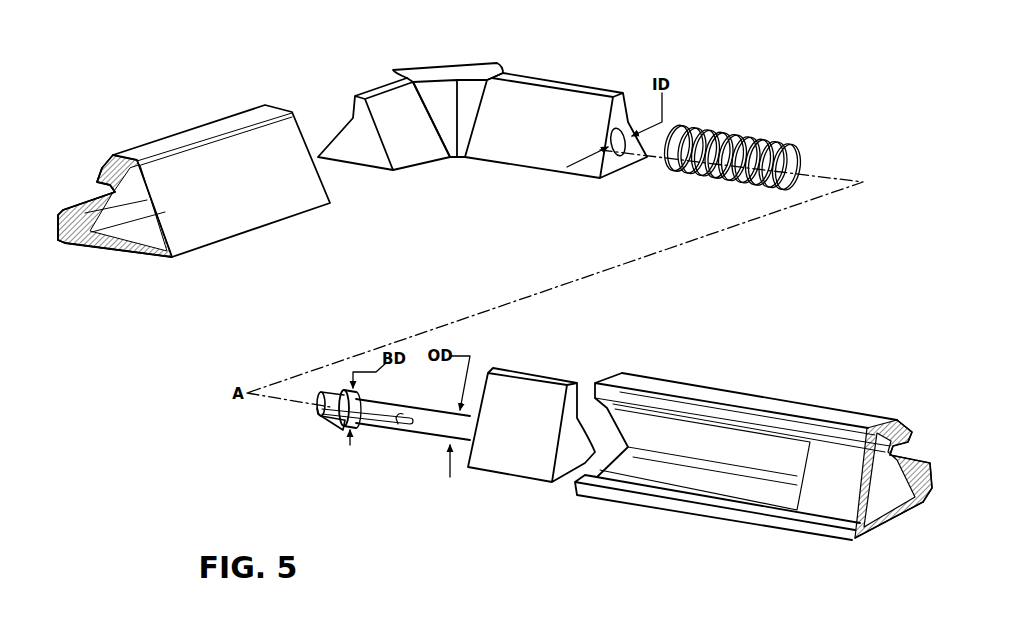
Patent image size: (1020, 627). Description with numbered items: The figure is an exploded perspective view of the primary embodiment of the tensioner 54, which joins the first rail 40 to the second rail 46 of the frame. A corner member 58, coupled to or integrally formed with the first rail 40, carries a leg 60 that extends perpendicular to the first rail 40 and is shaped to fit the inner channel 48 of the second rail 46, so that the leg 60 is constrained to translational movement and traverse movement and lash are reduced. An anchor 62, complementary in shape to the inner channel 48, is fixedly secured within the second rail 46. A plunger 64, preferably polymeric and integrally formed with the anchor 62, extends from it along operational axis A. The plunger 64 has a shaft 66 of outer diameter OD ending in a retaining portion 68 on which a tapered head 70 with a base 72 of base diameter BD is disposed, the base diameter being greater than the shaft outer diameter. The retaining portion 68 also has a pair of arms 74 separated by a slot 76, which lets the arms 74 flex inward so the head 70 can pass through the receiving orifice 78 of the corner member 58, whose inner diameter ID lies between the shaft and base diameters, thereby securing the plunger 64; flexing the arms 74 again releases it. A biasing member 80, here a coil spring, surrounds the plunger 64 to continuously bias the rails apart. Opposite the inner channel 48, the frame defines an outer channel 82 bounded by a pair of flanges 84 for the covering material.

The first rail 40 is at (168, 143).
The second rail 46 is at (850, 415).
The inner channel 48 is at (737, 488).
The tensioner 54 is at (705, 82).
The corner member 58 is at (448, 68).
The leg 60 is at (533, 107).
The anchor 62 is at (542, 397).
The plunger 64 is at (328, 392).
The shaft 66 is at (440, 432).
The retaining portion 68 is at (410, 443).
The head 70 is at (317, 407).
The base 72 is at (362, 404).
The arms 74 is at (397, 410).
The slot 76 is at (409, 425).
The receiving orifice 78 is at (620, 152).
The biasing member 80 is at (780, 152).
The outer channel 82 is at (82, 212).
The flanges 84 is at (105, 170).